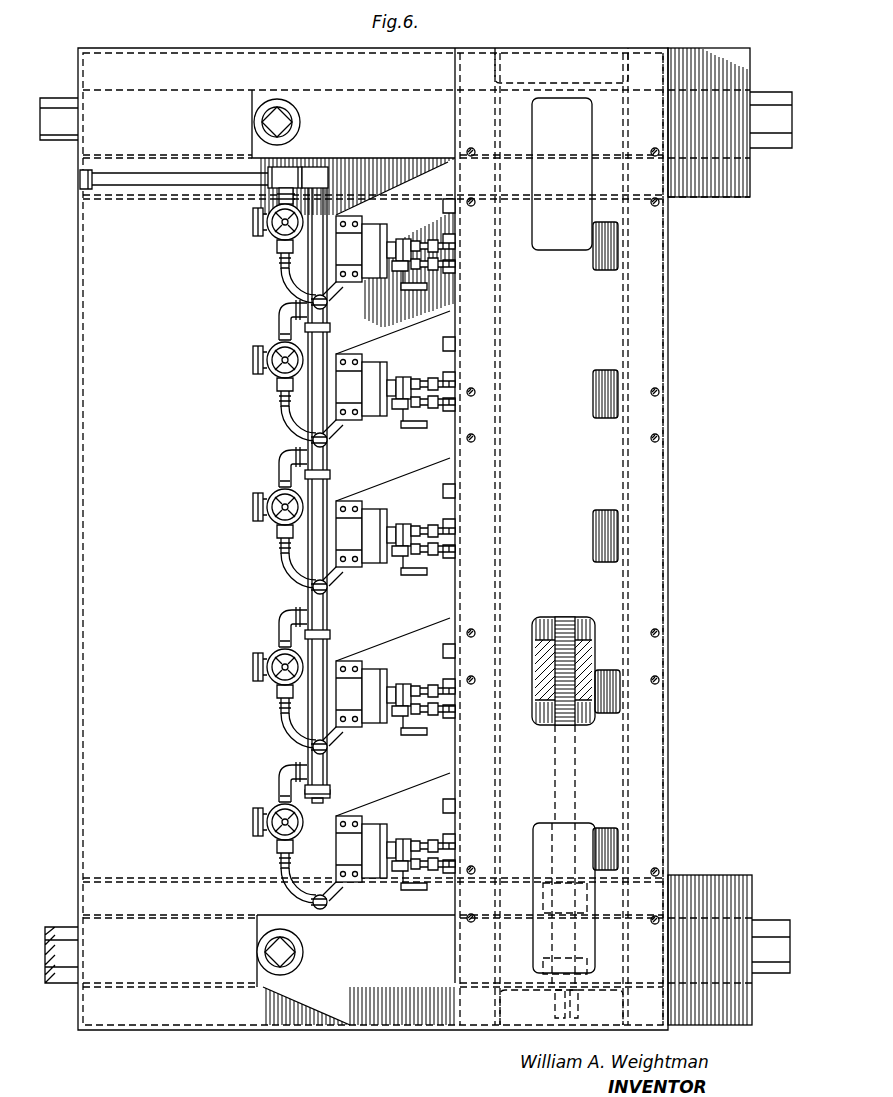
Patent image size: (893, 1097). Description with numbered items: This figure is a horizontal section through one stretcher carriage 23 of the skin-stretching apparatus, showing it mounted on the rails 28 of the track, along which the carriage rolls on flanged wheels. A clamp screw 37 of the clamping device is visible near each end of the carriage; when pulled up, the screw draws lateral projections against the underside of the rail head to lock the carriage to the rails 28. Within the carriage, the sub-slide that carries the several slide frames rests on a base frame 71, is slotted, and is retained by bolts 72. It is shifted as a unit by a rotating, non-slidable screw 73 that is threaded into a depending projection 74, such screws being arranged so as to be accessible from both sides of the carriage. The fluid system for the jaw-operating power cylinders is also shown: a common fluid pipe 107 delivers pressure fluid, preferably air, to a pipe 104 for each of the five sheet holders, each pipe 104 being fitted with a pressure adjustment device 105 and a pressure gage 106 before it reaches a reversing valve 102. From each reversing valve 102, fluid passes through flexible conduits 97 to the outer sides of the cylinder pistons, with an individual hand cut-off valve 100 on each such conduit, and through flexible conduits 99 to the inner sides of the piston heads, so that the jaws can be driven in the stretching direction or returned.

The stretcher carriage 23 is at (236, 1032).
The rails 28 is at (56, 118).
The clamp screw 37 is at (263, 122).
The base frame 71 is at (670, 572).
The bolts 72 is at (472, 636).
The screw 73 is at (555, 717).
The depending projection 74 is at (592, 652).
The flexible conduit 97 is at (448, 271).
The flexible conduit 99 is at (445, 246).
The hand cut-off valve 100 is at (408, 289).
The reversing valve 102 is at (348, 380).
The pipe 104 is at (330, 437).
The pressure adjustment device 105 is at (275, 680).
The pressure gage 106 is at (253, 366).
The common fluid pipe 107 is at (188, 180).